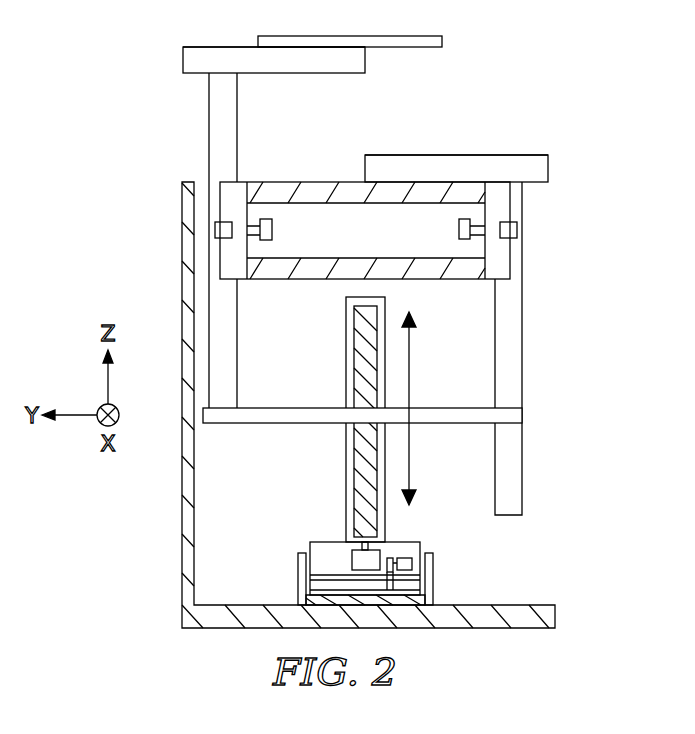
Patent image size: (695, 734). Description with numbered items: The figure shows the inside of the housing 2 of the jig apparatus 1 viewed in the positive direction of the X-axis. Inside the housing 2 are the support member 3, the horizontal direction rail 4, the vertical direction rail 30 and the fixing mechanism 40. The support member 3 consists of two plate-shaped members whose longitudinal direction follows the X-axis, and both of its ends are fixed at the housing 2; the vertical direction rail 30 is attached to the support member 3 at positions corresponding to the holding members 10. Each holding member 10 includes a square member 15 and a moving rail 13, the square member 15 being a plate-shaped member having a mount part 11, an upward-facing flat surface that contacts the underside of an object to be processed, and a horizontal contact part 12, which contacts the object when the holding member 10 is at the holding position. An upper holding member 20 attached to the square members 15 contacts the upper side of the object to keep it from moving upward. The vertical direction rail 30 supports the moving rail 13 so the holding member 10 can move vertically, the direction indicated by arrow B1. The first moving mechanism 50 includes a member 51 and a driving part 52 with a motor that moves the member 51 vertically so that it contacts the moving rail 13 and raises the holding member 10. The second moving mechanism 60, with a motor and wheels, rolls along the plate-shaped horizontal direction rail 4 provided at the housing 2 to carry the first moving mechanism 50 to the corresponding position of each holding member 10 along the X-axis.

The jig apparatus 1 is at (367, 324).
The housing 2 is at (187, 546).
The support member 3 is at (337, 188).
The horizontal direction rail 4 is at (417, 604).
The holding member 10 is at (367, 268).
The mount part 11 is at (208, 47).
The horizontal contact part 12 is at (198, 65).
The moving rail 13 is at (212, 120).
The square member 15 is at (370, 103).
The upper holding member 20 is at (443, 44).
The vertical direction rail 30 is at (380, 213).
The fixing mechanism 40 is at (282, 228).
The first moving mechanism 50 is at (362, 446).
The member 51 is at (471, 424).
The driving part 52 is at (386, 533).
The second moving mechanism 60 is at (298, 572).
The movement direction B1 is at (422, 408).